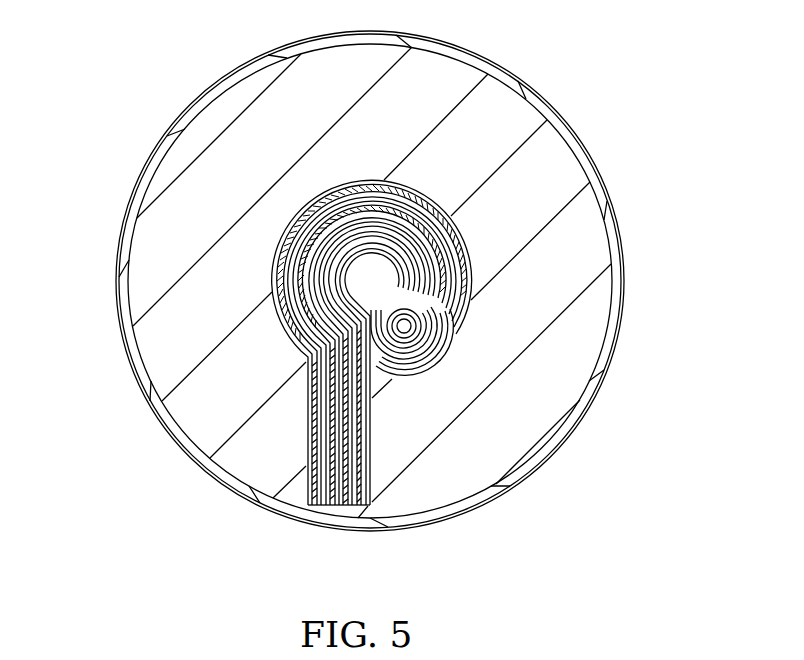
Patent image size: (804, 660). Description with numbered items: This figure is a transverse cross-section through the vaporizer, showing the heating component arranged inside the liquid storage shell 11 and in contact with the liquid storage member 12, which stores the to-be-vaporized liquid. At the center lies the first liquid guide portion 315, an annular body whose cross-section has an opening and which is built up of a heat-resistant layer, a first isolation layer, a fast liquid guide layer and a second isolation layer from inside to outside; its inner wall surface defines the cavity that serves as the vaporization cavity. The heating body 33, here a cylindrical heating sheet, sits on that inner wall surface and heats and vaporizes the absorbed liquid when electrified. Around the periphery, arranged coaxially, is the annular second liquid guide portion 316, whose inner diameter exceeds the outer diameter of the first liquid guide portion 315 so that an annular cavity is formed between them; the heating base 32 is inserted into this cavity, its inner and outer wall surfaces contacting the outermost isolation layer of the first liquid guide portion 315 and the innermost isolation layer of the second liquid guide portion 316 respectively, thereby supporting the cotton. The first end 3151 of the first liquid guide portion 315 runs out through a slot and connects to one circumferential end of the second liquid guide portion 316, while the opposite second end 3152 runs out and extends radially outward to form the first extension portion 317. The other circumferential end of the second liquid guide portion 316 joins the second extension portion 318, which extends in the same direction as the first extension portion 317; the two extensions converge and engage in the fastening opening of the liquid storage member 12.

The liquid storage shell 11 is at (103, 266).
The liquid storage member 12 is at (172, 331).
The first liquid guide portion 315 is at (368, 327).
The first end 3151 is at (432, 355).
The second end 3152 is at (298, 449).
The second liquid guide portion 316 is at (271, 268).
The first extension portion 317 is at (385, 430).
The second extension portion 318 is at (292, 457).
The heating base 32 is at (472, 270).
The heating body 33 is at (335, 256).